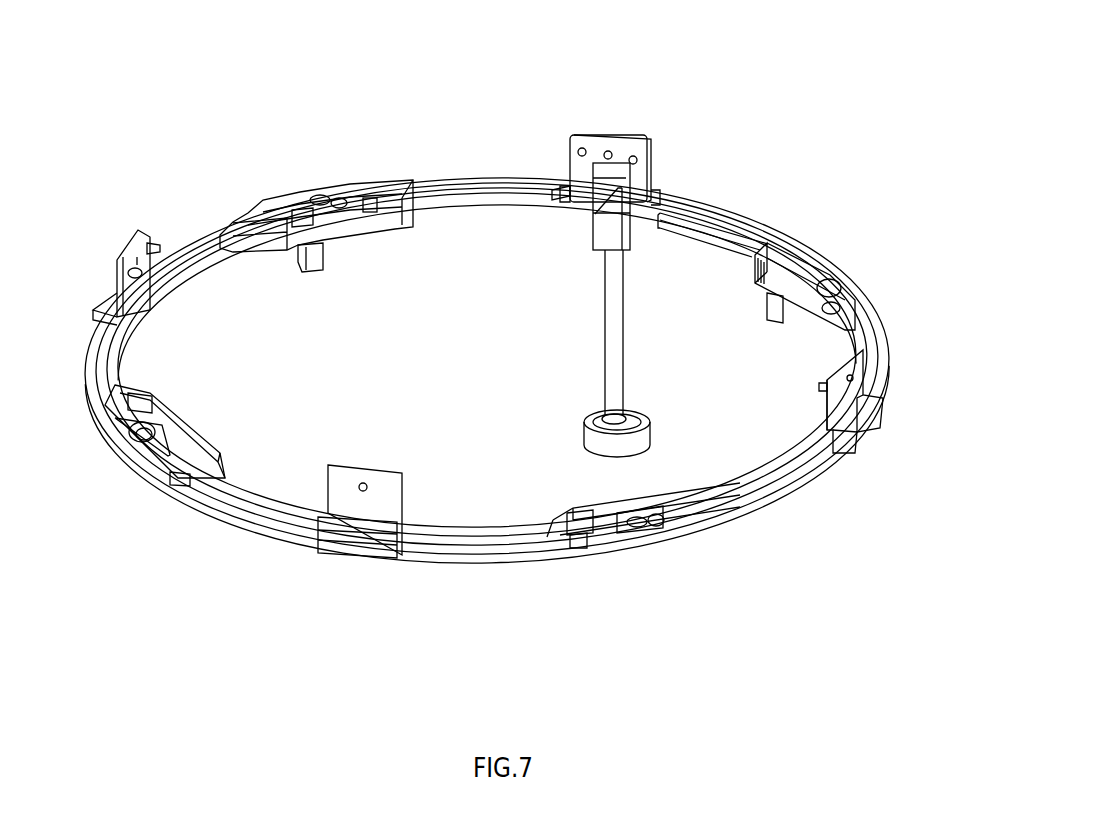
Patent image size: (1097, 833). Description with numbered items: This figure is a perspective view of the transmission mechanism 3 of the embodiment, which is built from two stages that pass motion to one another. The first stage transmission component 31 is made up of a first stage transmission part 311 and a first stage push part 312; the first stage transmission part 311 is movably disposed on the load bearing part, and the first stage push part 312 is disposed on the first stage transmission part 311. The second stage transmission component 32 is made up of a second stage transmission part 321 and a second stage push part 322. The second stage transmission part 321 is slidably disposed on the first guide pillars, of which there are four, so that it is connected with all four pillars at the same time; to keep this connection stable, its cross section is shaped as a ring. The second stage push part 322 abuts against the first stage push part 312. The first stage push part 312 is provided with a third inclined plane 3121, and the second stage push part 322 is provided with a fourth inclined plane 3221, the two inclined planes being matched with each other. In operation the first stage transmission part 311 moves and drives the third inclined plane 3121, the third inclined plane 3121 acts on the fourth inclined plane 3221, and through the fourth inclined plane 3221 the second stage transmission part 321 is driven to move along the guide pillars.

The transmission mechanism 3 is at (497, 340).
The first stage transmission component 31 is at (613, 310).
The first stage transmission part 311 is at (630, 320).
The first stage push part 312 is at (588, 220).
The third inclined plane 3121 is at (640, 212).
The second stage transmission component 32 is at (440, 590).
The second stage transmission part 321 is at (700, 530).
The second stage push part 322 is at (592, 216).
The fourth inclined plane 3221 is at (560, 188).